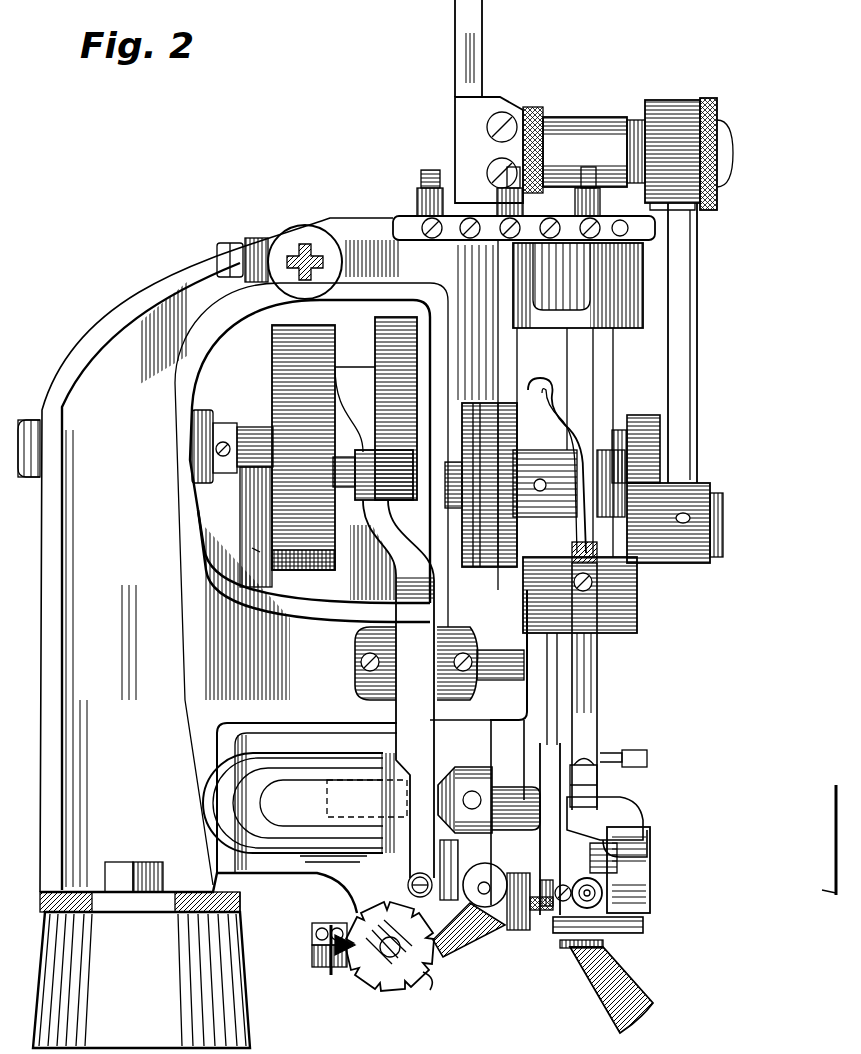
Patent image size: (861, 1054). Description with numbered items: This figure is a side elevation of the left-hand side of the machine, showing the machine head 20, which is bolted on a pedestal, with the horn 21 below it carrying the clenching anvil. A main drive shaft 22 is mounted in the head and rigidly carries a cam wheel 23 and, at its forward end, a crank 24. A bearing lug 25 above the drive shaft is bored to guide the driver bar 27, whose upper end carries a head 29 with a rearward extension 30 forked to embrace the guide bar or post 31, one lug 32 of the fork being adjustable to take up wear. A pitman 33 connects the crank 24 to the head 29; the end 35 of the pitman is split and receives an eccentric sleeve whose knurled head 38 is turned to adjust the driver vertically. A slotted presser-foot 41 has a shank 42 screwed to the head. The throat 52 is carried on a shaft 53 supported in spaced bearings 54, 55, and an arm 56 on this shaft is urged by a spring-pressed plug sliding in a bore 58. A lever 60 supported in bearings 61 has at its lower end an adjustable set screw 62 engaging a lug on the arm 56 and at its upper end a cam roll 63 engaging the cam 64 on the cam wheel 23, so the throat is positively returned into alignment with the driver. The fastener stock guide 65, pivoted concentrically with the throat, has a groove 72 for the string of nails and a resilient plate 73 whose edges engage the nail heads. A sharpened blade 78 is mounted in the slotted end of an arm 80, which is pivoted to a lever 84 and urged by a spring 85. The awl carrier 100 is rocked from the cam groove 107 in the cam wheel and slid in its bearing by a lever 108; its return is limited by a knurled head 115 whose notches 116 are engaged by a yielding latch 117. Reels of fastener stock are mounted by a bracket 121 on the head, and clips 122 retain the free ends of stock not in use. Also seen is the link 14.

The operating lever link 14 is at (493, 720).
The machine head 20 is at (427, 633).
The horn 21 is at (613, 1013).
The main drive shaft 22 is at (258, 435).
The cam wheel 23 is at (283, 492).
The crank 24 is at (643, 530).
The bearing lug 25 is at (573, 297).
The driver bar 27 is at (598, 382).
The head 29 is at (588, 118).
The rearward extension 30 is at (527, 118).
The guide bar or post 31 is at (478, 52).
The lug 32 is at (490, 103).
The pitman 33 is at (684, 355).
The end of the pitman 35 is at (678, 100).
The knurled head 38 is at (707, 98).
The presser-foot 41 is at (617, 927).
The shank 42 is at (637, 878).
The throat 52 is at (590, 913).
The shaft 53 is at (434, 785).
The bearing 54 is at (510, 807).
The bearing 55 is at (305, 807).
The arm 56 is at (463, 847).
The bore 58 is at (500, 903).
The lever 60 is at (405, 708).
The bearings 61 is at (355, 681).
The adjustable set screw 62 is at (407, 884).
The cam roll 63 is at (400, 450).
The cam 64 is at (397, 315).
The fastener stock guide 65 is at (595, 867).
The groove 72 is at (583, 852).
The resilient plate 73 is at (588, 827).
The blade 78 is at (607, 790).
The arm 80 is at (593, 697).
The lever 84 is at (610, 430).
The spring 85 is at (590, 585).
The awl carrier 100 is at (488, 935).
The cam groove 107 is at (353, 348).
The lever 108 is at (252, 548).
The knurled head 115 is at (383, 973).
The notches 116 is at (427, 975).
The yielding latch 117 is at (330, 947).
The bracket 121 is at (305, 245).
The clips 122 is at (418, 172).